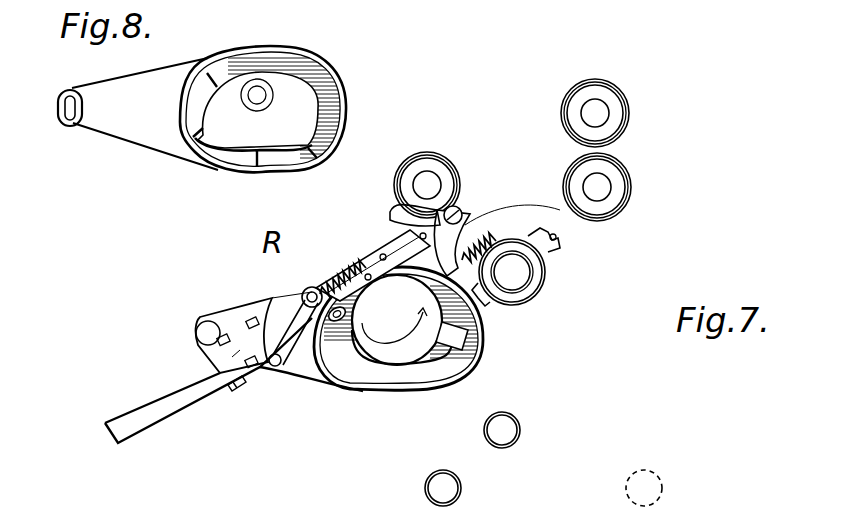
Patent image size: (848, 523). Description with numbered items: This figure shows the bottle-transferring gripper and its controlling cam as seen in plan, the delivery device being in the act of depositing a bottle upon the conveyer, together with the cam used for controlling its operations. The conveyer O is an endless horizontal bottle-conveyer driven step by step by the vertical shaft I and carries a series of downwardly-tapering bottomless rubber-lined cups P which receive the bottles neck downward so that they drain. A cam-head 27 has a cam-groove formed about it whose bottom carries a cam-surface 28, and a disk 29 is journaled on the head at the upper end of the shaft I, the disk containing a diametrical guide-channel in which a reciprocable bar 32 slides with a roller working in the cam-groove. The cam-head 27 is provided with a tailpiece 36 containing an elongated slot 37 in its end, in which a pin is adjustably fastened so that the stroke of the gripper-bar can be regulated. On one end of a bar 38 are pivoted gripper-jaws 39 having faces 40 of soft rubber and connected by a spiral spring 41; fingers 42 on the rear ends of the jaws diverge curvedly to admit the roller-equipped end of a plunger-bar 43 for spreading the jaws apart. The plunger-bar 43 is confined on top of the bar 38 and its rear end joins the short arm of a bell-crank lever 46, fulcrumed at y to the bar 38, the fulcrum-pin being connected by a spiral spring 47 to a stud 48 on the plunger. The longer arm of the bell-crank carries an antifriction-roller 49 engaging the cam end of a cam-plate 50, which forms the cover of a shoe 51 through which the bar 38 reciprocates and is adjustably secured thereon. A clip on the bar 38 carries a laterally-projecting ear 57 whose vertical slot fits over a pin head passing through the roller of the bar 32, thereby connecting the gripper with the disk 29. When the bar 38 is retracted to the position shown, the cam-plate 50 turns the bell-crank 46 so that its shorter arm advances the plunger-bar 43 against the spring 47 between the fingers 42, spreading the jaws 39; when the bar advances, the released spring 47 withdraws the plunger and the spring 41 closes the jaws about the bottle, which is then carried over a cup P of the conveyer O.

In FIG. 8, the cam-head 27 is at (343, 104).
In FIG. 7, the cam-head 27 is at (472, 375).
In FIG. 8, the cam-surface 28 is at (241, 155).
In FIG. 7, the cam-surface 28 is at (415, 375).
In FIG. 7, the disk 29 is at (397, 356).
In FIG. 7, the reciprocable bar 32 is at (460, 337).
In FIG. 8, the tailpiece 36 is at (150, 150).
In FIG. 7, the tailpiece 36 is at (223, 320).
In FIG. 8, the elongated slot 37 is at (71, 124).
In FIG. 7, the bar 38 is at (133, 418).
In FIG. 7, the gripper-jaws 39 is at (500, 227).
In FIG. 7, the faces 40 is at (552, 248).
In FIG. 7, the spiral spring 41 is at (468, 268).
In FIG. 7, the fingers 42 is at (396, 214).
In FIG. 7, the plunger-bar 43 is at (366, 297).
In FIG. 7, the bell-crank lever 46 is at (293, 320).
In FIG. 7, the spiral spring 47 is at (334, 302).
In FIG. 7, the stud 48 is at (352, 276).
In FIG. 7, the antifriction-roller 49 is at (276, 367).
In FIG. 7, the cam-plate 50 is at (230, 358).
In FIG. 7, the shoe 51 is at (238, 382).
In FIG. 7, the ear 57 is at (397, 320).
In FIG. 8, the shaft I is at (258, 94).
In FIG. 7, the bottle-conveyer O is at (563, 116).
In FIG. 7, the cups P is at (520, 143).
In FIG. 7, the roller IP is at (517, 277).
In FIG. 7, the fulcrum y is at (312, 292).